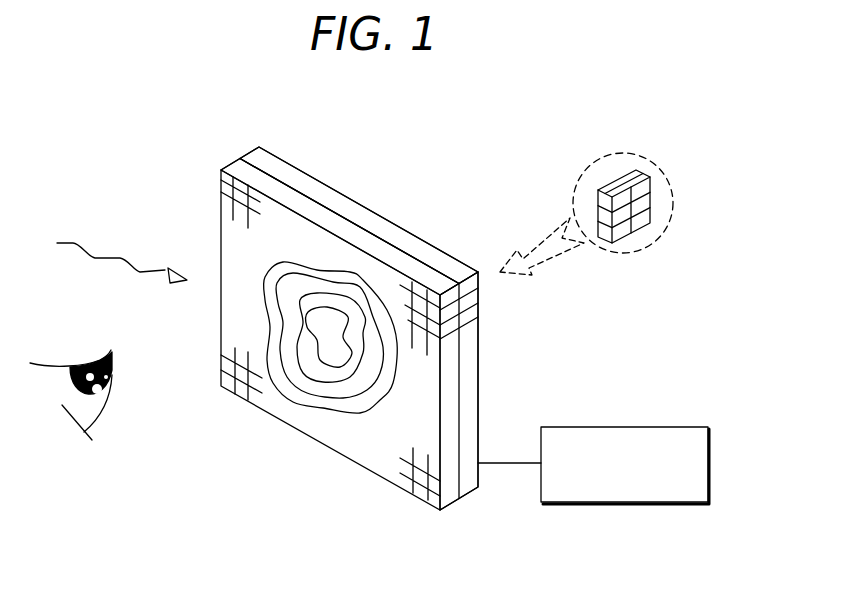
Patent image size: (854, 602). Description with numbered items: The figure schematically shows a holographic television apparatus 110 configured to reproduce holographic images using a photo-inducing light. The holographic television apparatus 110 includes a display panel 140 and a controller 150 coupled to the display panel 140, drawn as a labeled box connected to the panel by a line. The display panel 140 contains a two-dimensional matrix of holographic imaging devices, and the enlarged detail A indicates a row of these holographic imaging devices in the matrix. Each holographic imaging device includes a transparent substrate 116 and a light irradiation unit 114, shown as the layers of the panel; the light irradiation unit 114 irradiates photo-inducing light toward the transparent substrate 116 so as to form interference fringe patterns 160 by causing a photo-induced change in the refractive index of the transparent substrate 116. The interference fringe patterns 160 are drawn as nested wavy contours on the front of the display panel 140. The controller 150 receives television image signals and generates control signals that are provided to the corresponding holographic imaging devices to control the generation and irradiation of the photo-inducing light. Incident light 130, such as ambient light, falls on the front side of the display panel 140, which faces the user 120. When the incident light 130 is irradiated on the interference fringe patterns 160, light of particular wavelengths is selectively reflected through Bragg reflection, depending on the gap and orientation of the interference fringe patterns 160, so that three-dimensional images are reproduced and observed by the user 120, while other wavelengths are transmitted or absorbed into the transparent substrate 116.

The holographic television apparatus 110 is at (420, 147).
The light irradiation unit 114 is at (247, 153).
The transparent substrate 116 is at (226, 161).
The user 120 is at (82, 478).
The incident light 130 is at (115, 258).
The display panel 140 is at (435, 247).
The controller 150 is at (667, 427).
The interference fringe patterns 160 is at (310, 412).
The row of holographic imaging devices A is at (625, 152).